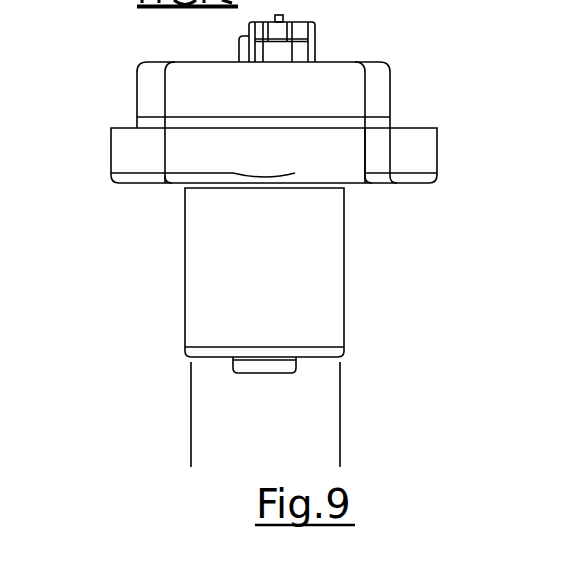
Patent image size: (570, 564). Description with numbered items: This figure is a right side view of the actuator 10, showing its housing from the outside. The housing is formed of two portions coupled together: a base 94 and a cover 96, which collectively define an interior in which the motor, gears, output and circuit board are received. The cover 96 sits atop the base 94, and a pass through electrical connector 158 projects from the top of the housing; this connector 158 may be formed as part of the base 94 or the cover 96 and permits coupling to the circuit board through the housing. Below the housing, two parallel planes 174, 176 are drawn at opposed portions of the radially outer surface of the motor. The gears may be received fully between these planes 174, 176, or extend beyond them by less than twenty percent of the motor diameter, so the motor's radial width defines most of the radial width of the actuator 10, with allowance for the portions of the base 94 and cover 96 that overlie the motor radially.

The actuator 10 is at (413, 42).
The base 94 is at (337, 151).
The cover 96 is at (377, 97).
The pass through electrical connector 158 is at (298, 51).
The parallel plane 174 is at (191, 420).
The parallel plane 176 is at (340, 415).